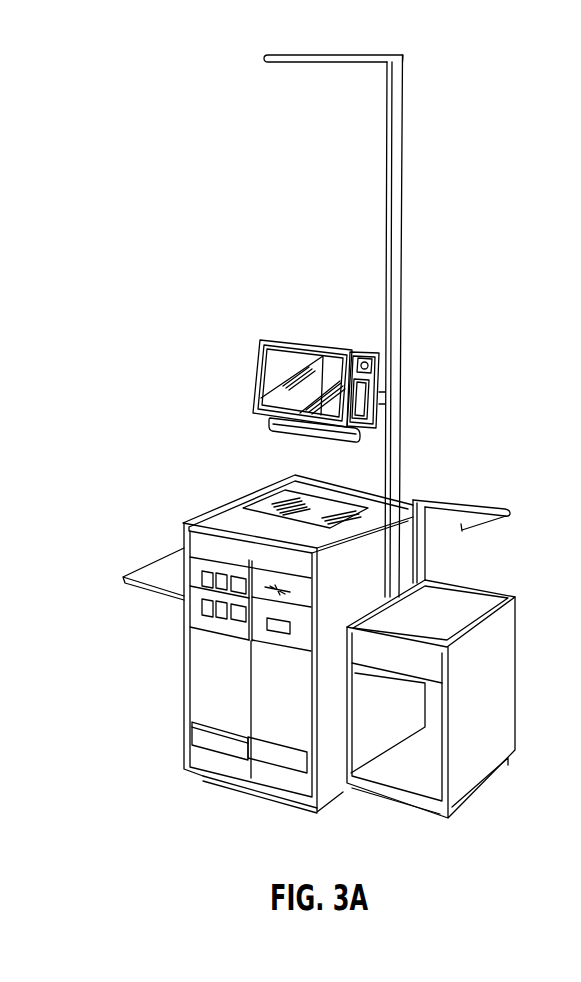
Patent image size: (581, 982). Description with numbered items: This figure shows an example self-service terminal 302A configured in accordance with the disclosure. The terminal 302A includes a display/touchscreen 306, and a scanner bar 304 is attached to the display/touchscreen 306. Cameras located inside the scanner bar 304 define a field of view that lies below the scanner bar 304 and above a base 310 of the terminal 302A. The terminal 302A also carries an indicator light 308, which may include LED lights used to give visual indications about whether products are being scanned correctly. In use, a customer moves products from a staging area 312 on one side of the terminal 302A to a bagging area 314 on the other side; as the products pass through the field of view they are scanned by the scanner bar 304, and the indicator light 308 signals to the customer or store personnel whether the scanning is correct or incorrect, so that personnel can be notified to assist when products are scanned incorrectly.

The self-service terminal 302A is at (270, 296).
The scanner bar 304 is at (270, 425).
The display/touchscreen 306 is at (260, 350).
The indicator light 308 is at (321, 55).
The base 310 is at (204, 678).
The staging area 312 is at (165, 554).
The bagging area 314 is at (492, 558).